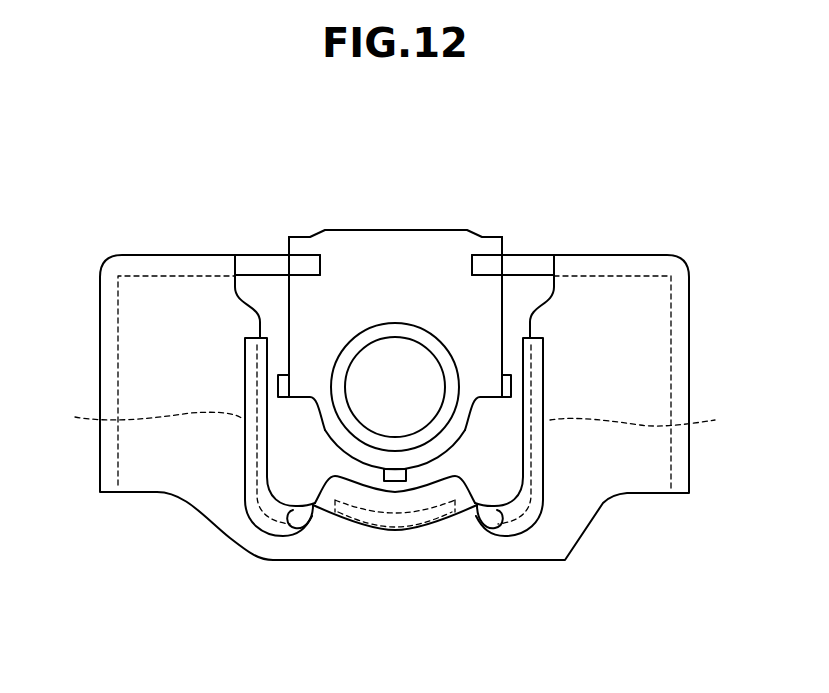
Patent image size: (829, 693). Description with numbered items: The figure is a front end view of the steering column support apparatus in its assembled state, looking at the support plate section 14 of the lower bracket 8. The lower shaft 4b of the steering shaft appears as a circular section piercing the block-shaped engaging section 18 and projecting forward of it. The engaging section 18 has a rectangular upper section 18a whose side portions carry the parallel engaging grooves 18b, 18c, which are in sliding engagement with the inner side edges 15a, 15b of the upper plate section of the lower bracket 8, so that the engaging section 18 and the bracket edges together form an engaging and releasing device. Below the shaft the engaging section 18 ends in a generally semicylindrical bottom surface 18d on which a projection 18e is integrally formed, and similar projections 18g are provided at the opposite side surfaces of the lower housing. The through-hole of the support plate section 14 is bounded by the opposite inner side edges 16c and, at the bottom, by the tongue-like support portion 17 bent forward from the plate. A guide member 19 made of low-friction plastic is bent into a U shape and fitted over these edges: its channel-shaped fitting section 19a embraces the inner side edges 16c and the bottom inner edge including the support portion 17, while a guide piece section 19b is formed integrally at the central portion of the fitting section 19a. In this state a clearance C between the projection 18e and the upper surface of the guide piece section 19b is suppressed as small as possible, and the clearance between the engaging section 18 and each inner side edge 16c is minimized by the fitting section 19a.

The lower shaft 4b is at (375, 373).
The lower bracket 8 is at (696, 339).
The support plate section 14 is at (643, 473).
The inner side edge 15a is at (297, 265).
The inner side edge 15b is at (490, 268).
The inner side edge 16c is at (394, 417).
The support portion 17 is at (450, 497).
The engaging section 18 is at (393, 391).
The upper section 18a is at (437, 253).
The engaging groove 18b is at (482, 268).
The engaging groove 18c is at (293, 263).
The bottom surface 18d is at (473, 427).
The projection 18e is at (390, 481).
The projection 18g is at (283, 387).
The guide member 19 is at (243, 487).
The fitting section 19a is at (538, 401).
The guide piece section 19b is at (358, 492).
The clearance C is at (397, 493).